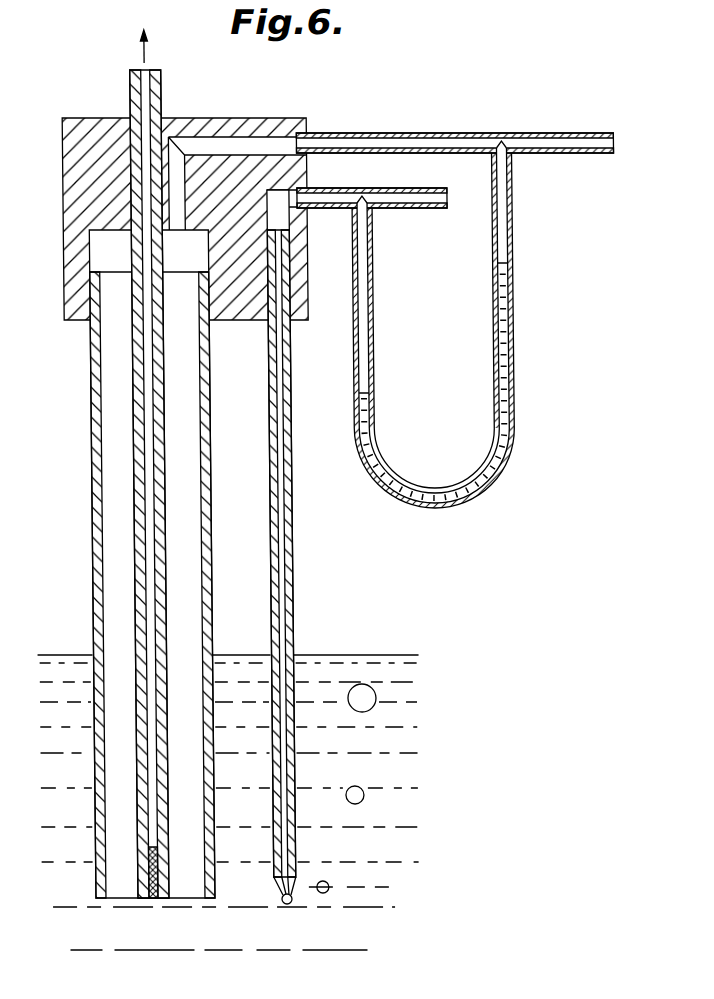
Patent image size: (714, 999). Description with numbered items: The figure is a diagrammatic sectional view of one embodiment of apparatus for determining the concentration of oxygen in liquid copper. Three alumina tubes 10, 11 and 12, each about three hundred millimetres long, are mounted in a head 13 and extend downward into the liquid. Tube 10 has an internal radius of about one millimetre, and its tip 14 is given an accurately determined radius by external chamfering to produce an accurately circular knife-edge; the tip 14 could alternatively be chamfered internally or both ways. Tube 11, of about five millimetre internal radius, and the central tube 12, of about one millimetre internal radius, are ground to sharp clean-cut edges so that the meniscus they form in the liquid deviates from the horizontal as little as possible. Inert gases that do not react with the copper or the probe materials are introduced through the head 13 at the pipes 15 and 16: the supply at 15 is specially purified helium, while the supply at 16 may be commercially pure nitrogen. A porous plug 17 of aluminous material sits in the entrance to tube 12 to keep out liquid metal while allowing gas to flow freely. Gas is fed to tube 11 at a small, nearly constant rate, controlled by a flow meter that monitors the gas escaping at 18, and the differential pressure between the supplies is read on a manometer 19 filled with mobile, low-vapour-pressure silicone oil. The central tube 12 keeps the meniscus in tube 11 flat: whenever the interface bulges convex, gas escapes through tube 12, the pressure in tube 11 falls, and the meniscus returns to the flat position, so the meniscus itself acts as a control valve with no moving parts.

The alumina tube 10 is at (287, 561).
The alumina tube 11 is at (86, 389).
The central tube 12 is at (129, 441).
The head 13 is at (84, 297).
The tip 14 is at (269, 883).
The gas supply tube 15 is at (473, 198).
The gas supply tube 16 is at (634, 143).
The porous plug 17 is at (140, 867).
The gas escape 18 is at (127, 47).
The manometer 19 is at (435, 502).